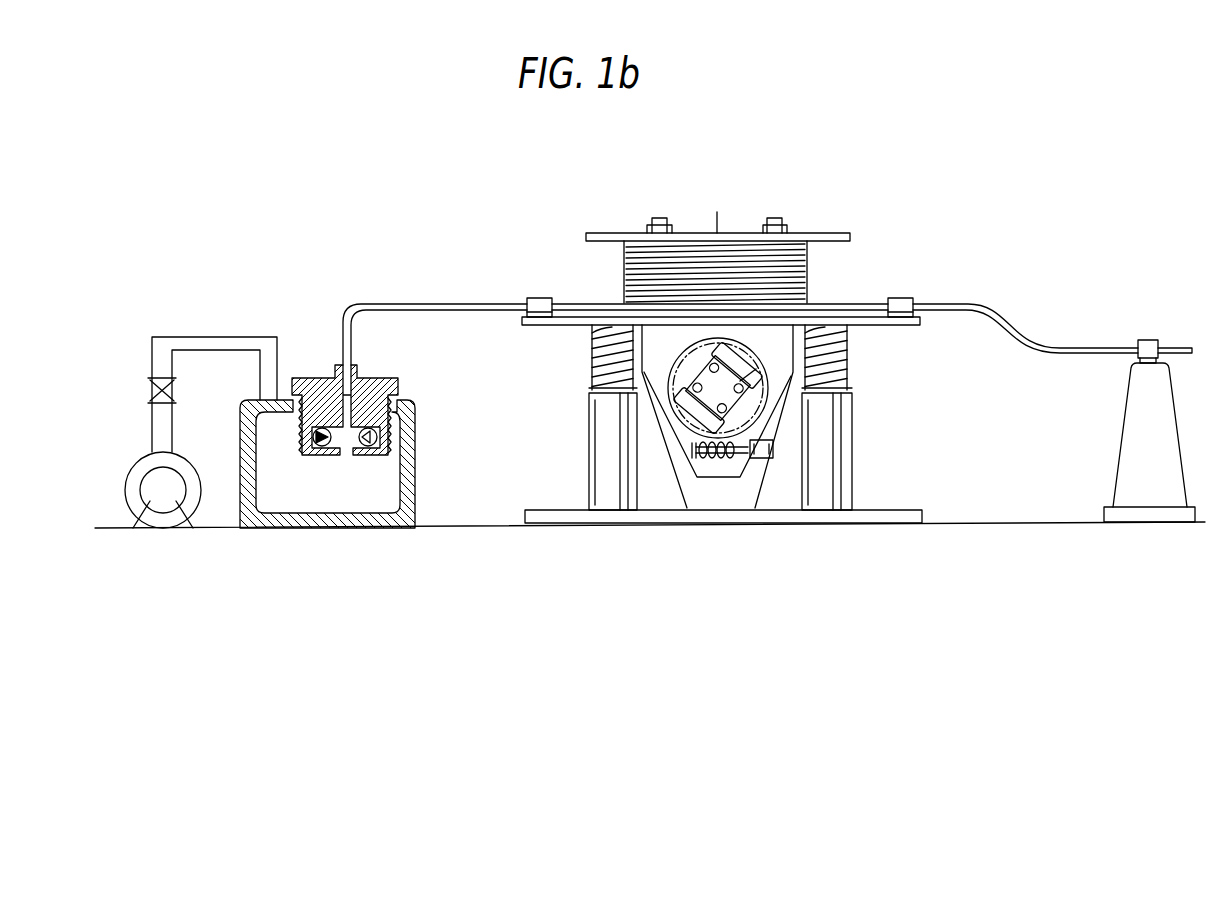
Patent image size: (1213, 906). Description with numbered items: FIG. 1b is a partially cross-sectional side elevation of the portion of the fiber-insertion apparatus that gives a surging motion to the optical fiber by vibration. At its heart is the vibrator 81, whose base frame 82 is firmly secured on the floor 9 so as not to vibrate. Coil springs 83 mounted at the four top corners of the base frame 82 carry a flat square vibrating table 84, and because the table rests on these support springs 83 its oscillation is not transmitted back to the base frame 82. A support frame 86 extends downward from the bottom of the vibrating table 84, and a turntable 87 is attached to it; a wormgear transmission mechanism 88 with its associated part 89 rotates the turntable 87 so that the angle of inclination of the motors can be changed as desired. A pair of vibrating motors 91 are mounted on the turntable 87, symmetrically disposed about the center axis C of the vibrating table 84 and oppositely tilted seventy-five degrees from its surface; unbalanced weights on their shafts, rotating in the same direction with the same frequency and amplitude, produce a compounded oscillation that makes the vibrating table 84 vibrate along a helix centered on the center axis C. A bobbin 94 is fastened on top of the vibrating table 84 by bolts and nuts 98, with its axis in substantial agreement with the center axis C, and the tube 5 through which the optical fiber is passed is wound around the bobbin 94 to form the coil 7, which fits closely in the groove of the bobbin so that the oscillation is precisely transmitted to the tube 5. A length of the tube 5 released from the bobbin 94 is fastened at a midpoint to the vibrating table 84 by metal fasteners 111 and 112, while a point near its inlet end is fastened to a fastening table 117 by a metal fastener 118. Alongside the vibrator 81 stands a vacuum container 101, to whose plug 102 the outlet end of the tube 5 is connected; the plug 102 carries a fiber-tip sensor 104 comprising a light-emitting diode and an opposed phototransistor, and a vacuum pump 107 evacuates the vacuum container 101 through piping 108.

The tube 5 is at (381, 304).
The coil 7 is at (812, 273).
The floor 9 is at (588, 564).
The vibrator 81 is at (848, 284).
The base frame 82 is at (850, 419).
The coil springs 83 is at (845, 362).
The vibrating table 84 is at (905, 326).
The support frame 86 is at (671, 357).
The turntable 87 is at (764, 367).
The wormgear transmission mechanism 88 is at (703, 458).
The nut 89 is at (762, 458).
The vibrating motors 91 is at (737, 364).
The bobbin 94 is at (834, 233).
The bolts and nuts 98 is at (782, 227).
The vacuum container 101 is at (412, 418).
The plug 102 is at (373, 378).
The fiber-tip sensor 104 is at (318, 452).
The vacuum pump 107 is at (184, 467).
The piping 108 is at (233, 337).
The metal fastener 111 is at (902, 304).
The metal fastener 112 is at (539, 303).
The fastening table 117 is at (1135, 382).
The metal fastener 118 is at (1148, 340).
The center axis C is at (717, 212).